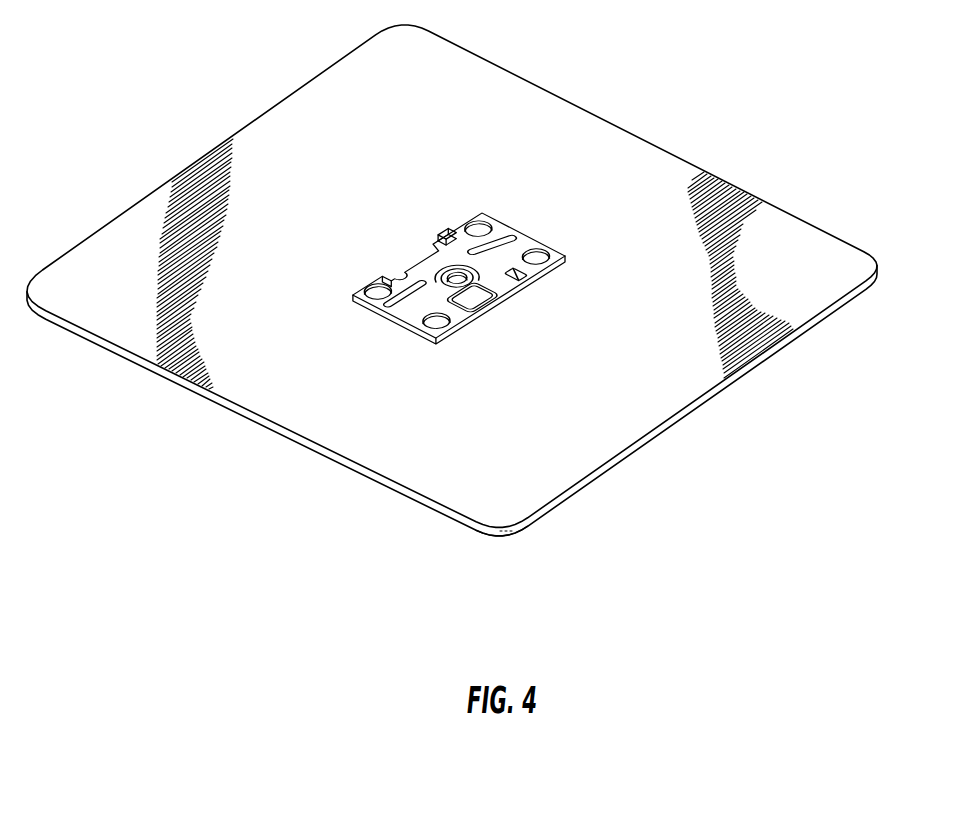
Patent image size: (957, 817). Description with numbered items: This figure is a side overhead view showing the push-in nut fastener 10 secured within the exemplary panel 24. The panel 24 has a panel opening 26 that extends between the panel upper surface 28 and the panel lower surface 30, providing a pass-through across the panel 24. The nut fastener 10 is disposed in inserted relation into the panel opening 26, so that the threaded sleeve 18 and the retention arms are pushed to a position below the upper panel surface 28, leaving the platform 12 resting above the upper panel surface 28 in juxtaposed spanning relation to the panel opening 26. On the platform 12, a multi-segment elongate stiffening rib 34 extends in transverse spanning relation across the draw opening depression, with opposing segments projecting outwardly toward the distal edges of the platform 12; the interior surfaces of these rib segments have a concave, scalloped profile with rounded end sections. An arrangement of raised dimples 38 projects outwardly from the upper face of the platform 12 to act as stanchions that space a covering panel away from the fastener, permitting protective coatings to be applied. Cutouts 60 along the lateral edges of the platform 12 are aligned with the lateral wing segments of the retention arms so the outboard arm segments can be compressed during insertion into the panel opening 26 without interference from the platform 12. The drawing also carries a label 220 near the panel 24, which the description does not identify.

The push-in nut fastener 10 is at (416, 183).
The platform 12 is at (462, 345).
The sleeve 18 is at (523, 259).
The panel 24 is at (413, 71).
The panel opening 26 is at (566, 210).
The panel upper surface 28 is at (806, 240).
The panel lower surface 30 is at (857, 306).
The stiffening rib 34 is at (372, 318).
The raised dimples 38 is at (481, 220).
The cutouts 60 is at (449, 235).
The panel corner 220 is at (508, 556).